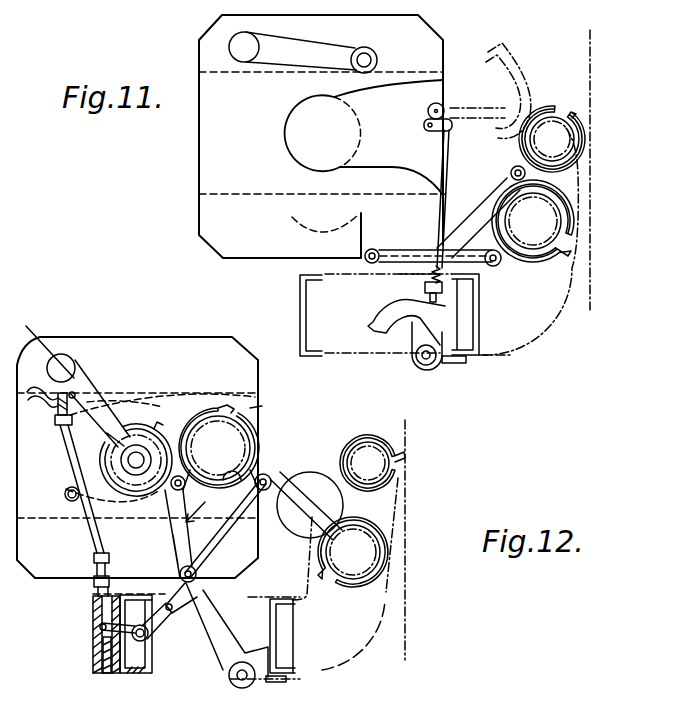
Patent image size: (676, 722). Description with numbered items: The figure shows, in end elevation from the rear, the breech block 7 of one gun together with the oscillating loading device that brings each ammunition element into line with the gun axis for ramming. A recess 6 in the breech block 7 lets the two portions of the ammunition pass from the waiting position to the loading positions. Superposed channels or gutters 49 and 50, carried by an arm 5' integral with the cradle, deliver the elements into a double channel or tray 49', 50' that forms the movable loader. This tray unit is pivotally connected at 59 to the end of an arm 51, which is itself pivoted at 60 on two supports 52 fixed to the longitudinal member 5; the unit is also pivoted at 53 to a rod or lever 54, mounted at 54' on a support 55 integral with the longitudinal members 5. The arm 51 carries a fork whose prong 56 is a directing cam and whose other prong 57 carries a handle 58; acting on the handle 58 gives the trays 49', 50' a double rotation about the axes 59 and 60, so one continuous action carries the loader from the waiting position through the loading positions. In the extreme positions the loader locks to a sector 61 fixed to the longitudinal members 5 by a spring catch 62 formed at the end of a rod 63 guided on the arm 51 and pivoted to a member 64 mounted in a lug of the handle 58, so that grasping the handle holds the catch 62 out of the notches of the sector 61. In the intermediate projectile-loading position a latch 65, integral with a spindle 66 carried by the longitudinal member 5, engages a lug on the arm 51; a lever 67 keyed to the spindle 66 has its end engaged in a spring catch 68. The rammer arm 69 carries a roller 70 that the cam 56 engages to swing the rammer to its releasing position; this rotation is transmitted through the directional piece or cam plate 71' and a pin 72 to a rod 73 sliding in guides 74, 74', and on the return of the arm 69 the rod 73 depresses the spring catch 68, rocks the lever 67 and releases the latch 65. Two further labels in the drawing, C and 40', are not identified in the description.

In FIG. 11, the breech block 7 is at (199, 125).
In FIG. 12, the breech block 7 is at (166, 343).
In FIG. 11, the rammer arm 69 is at (316, 54).
In FIG. 11, the roller 70 is at (374, 58).
In FIG. 11, the cover C is at (437, 91).
In FIG. 11, the prong forming directing cam 56 is at (512, 68).
In FIG. 11, the prong 57 is at (478, 112).
In FIG. 11, the handle 58 is at (428, 110).
In FIG. 11, the roller 40' is at (552, 128).
In FIG. 11, the member 64 is at (436, 132).
In FIG. 11, the pivot axis 59 is at (510, 171).
In FIG. 12, the pivot axis 59 is at (190, 486).
In FIG. 11, the arm 51 is at (482, 208).
In FIG. 12, the arm 51 is at (212, 636).
In FIG. 11, the rod 63 is at (440, 212).
In FIG. 11, the support 55 is at (298, 270).
In FIG. 11, the pivot 54' is at (356, 251).
In FIG. 12, the pivot 54' is at (206, 580).
In FIG. 11, the rod or lever 54 is at (435, 245).
In FIG. 12, the rod or lever 54 is at (225, 528).
In FIG. 11, the spring catch 62 is at (424, 288).
In FIG. 11, the pivot 53 is at (494, 267).
In FIG. 12, the pivot 53 is at (268, 476).
In FIG. 11, the channel or tray element 50' is at (533, 238).
In FIG. 12, the channel or tray element 50' is at (233, 447).
In FIG. 11, the longitudinal member 5 is at (404, 315).
In FIG. 12, the longitudinal member 5 is at (280, 595).
In FIG. 11, the sector 61 is at (385, 328).
In FIG. 11, the arm 5' is at (536, 192).
In FIG. 12, the arm 5' is at (363, 545).
In FIG. 11, the pivot axis 60 is at (433, 362).
In FIG. 12, the pivot axis 60 is at (231, 679).
In FIG. 11, the supports 52 is at (450, 363).
In FIG. 12, the supports 52 is at (280, 682).
In FIG. 12, the directional piece 71' is at (49, 368).
In FIG. 12, the pin or knob 72 is at (55, 419).
In FIG. 12, the guide 74' is at (78, 410).
In FIG. 12, the rod 73 is at (86, 535).
In FIG. 12, the guide 74 is at (82, 572).
In FIG. 12, the spring catch 68 is at (93, 606).
In FIG. 12, the lever 67 is at (100, 628).
In FIG. 12, the spindle 66 is at (147, 640).
In FIG. 12, the latch 65 is at (158, 622).
In FIG. 12, the channel or tray element 49' is at (160, 457).
In FIG. 12, the recess 6 is at (262, 406).
In FIG. 12, the channel or gutter 49 is at (357, 486).
In FIG. 12, the channel or gutter 50 is at (377, 552).